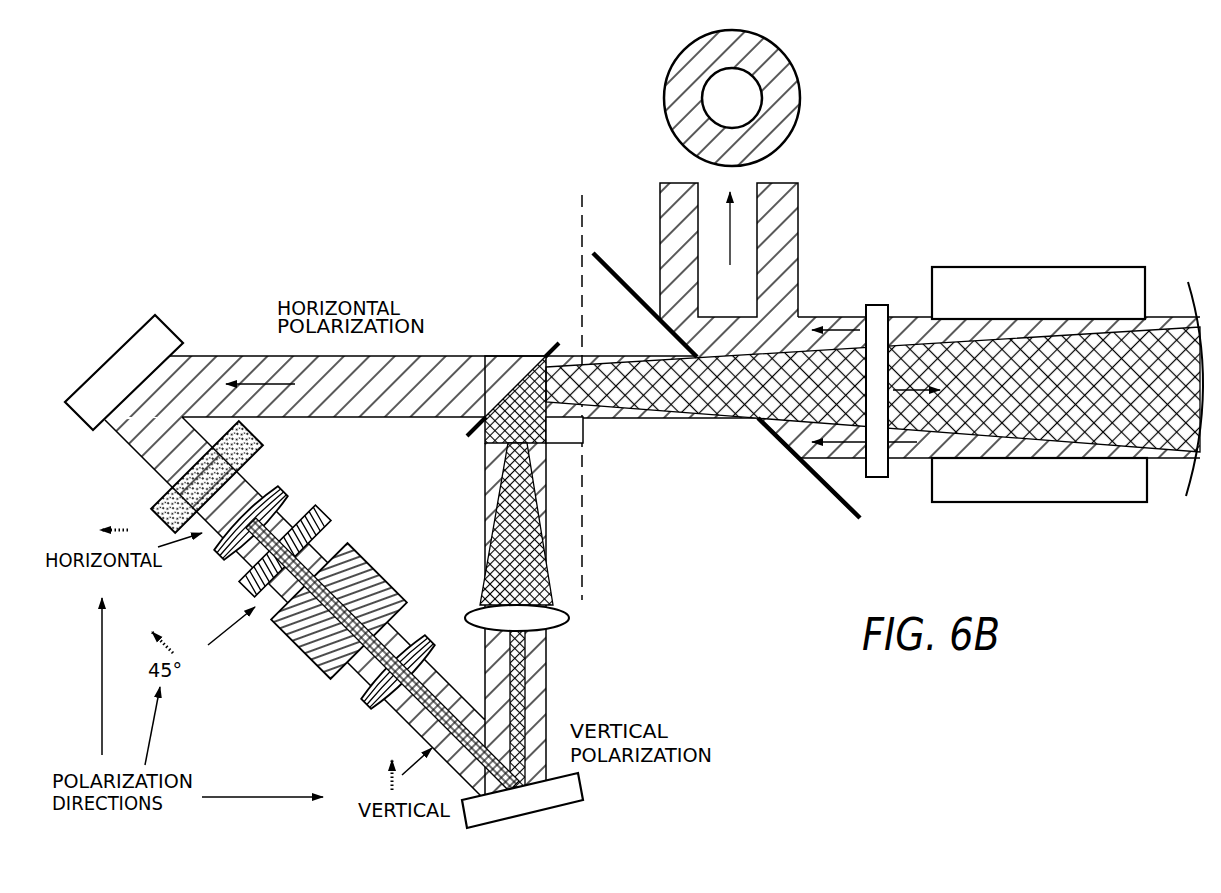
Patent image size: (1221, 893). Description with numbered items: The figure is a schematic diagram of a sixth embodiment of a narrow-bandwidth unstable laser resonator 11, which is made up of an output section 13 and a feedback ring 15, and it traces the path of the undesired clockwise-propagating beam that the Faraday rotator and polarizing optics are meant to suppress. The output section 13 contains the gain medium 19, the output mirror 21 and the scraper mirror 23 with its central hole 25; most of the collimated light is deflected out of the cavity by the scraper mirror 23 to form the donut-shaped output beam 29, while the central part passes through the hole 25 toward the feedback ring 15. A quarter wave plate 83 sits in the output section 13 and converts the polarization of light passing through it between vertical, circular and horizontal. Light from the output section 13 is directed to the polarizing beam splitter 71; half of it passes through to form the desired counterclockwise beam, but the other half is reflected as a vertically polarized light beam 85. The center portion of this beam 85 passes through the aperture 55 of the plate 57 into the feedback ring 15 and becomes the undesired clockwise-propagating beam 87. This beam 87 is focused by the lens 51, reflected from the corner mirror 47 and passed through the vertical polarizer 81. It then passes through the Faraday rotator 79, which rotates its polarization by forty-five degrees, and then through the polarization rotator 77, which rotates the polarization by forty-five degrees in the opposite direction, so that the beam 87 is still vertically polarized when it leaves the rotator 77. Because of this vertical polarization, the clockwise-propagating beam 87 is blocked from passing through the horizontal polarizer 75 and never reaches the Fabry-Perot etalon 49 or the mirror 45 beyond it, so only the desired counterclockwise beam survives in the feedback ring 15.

The unstable laser resonator 11 is at (489, 128).
The output section 13 is at (913, 200).
The feedback ring 15 is at (298, 200).
The gain medium 19 is at (1079, 268).
The output mirror 21 is at (1192, 486).
The scraper mirror 23 is at (860, 510).
The hole 25 is at (716, 392).
The output beam 29 is at (798, 213).
The mirror 45 is at (112, 357).
The corner mirror 47 is at (583, 792).
The Fabry-Perot etalon 49 is at (265, 441).
The lens 51 is at (569, 620).
The aperture 55 is at (537, 447).
The plate 57 is at (581, 442).
The polarizing beam splitter 71 is at (547, 354).
The horizontal polarizer 75 is at (280, 500).
The 45° polarization rotator 77 is at (324, 512).
The Faraday rotator 79 is at (384, 570).
The vertical polarizer 81 is at (362, 708).
The quarter wave plate 83 is at (876, 305).
The vertically polarized light beam 85 is at (465, 437).
The clockwise-propagating beam 87 is at (508, 478).